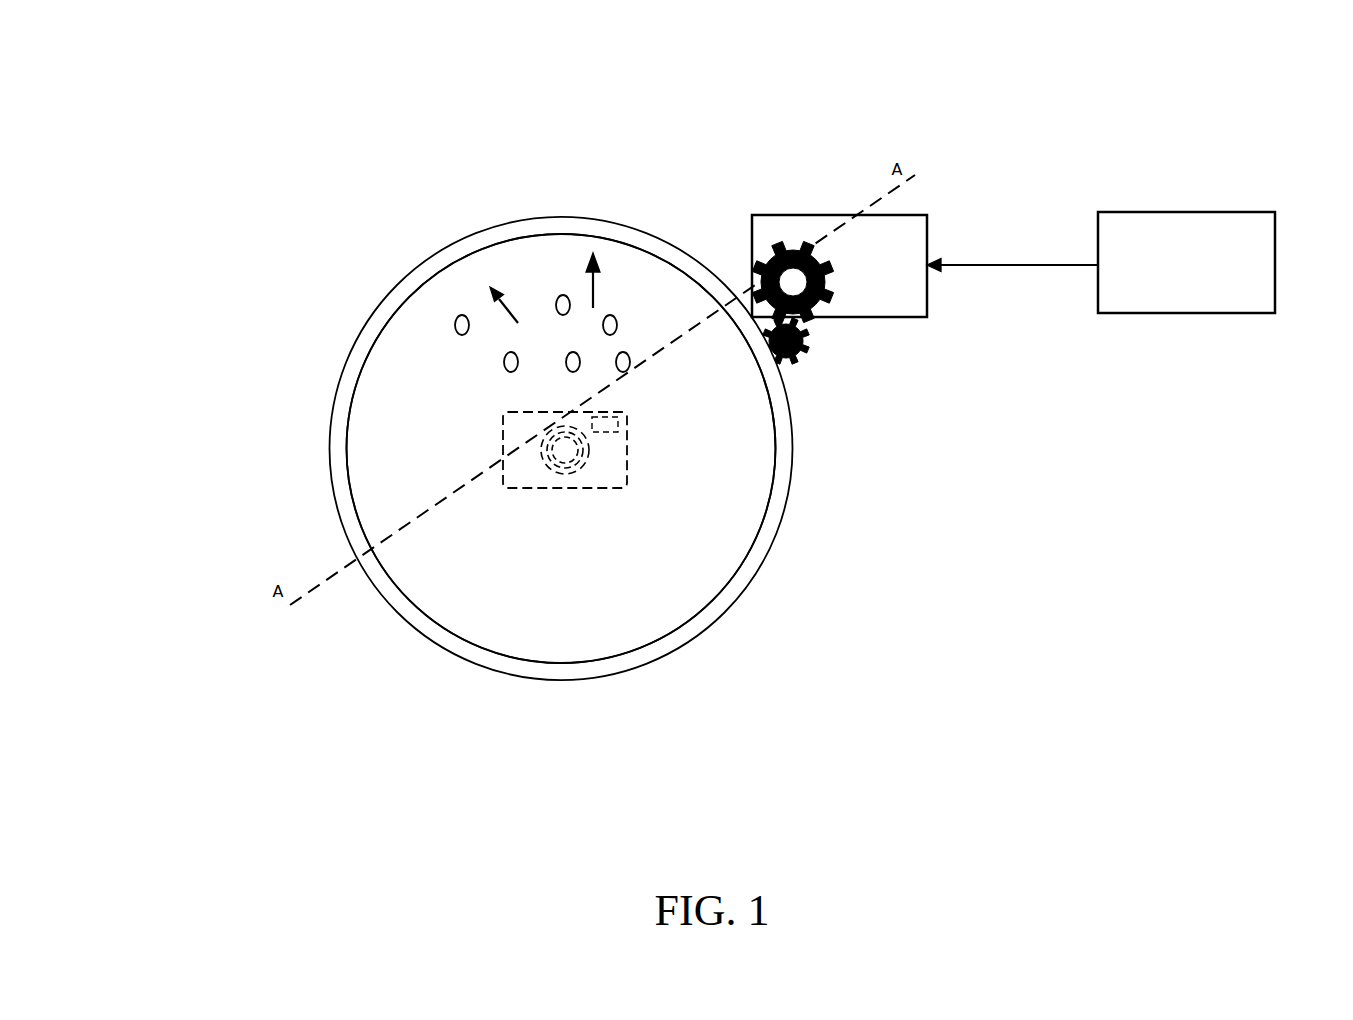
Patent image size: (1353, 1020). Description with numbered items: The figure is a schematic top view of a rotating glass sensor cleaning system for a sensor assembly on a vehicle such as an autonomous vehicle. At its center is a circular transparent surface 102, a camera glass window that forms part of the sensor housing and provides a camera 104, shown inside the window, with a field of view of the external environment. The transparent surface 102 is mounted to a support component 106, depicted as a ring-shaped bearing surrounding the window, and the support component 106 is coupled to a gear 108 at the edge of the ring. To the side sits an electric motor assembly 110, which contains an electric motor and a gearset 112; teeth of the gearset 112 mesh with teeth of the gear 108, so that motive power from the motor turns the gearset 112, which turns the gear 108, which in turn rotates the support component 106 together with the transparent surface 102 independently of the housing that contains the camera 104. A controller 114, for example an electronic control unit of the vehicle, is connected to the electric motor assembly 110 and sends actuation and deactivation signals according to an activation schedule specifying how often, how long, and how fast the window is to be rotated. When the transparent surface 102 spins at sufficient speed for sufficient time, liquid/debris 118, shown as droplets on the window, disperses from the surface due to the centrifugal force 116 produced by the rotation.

The transparent surface 102 is at (403, 373).
The camera 104 is at (548, 488).
The support component 106 is at (535, 217).
The gear 108 is at (795, 353).
The electric motor assembly 110 is at (838, 213).
The gearset 112 is at (767, 250).
The controller 114 is at (1187, 212).
The centrifugal force 116 is at (497, 300).
The liquid/debris 118 is at (497, 363).